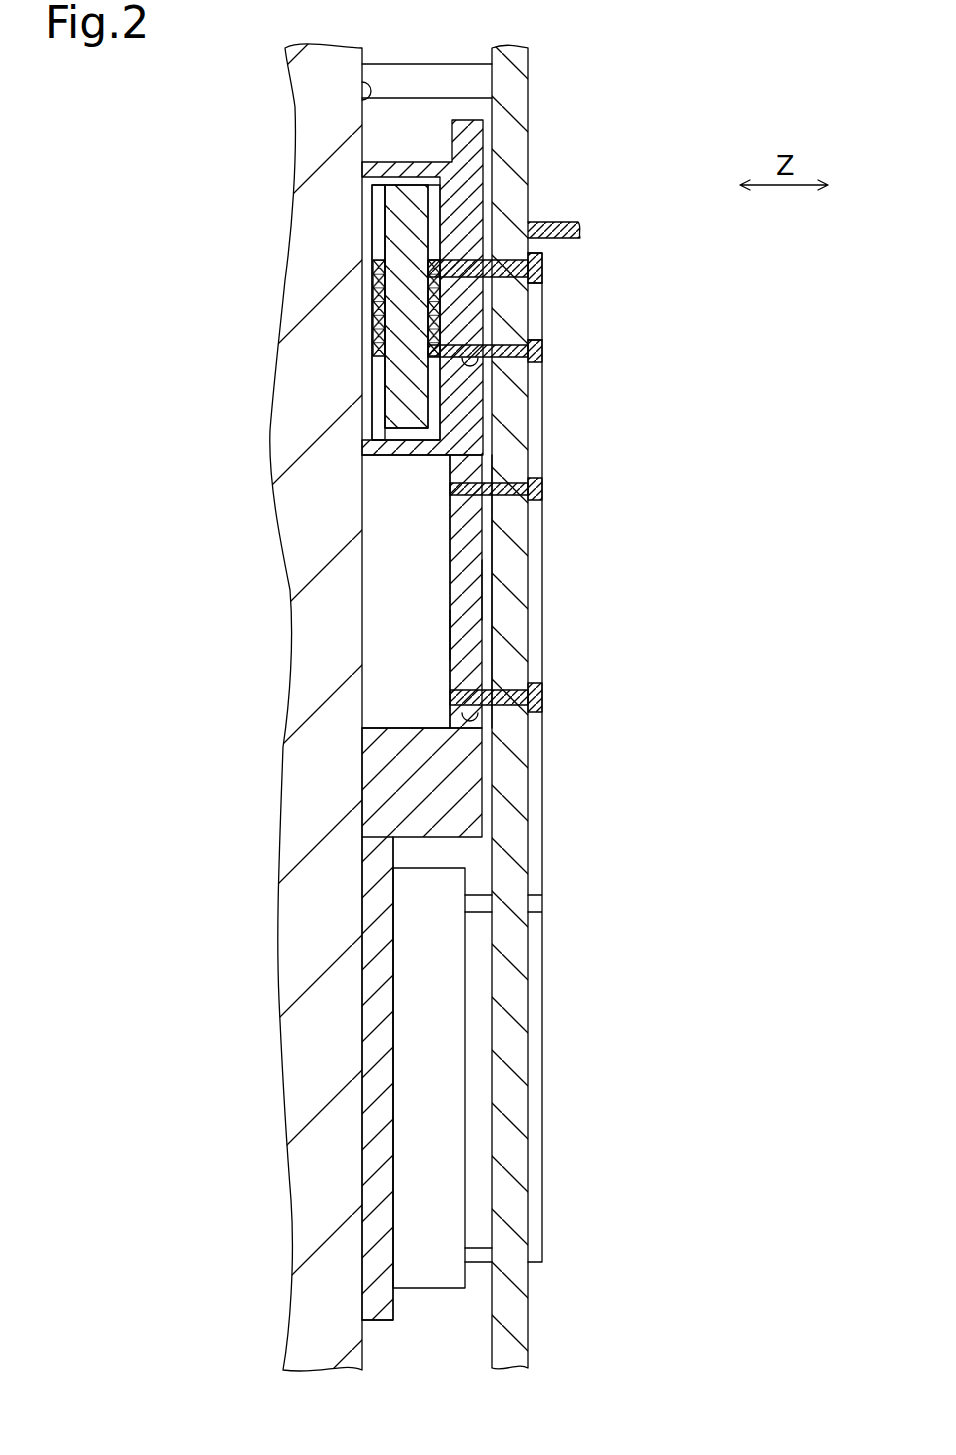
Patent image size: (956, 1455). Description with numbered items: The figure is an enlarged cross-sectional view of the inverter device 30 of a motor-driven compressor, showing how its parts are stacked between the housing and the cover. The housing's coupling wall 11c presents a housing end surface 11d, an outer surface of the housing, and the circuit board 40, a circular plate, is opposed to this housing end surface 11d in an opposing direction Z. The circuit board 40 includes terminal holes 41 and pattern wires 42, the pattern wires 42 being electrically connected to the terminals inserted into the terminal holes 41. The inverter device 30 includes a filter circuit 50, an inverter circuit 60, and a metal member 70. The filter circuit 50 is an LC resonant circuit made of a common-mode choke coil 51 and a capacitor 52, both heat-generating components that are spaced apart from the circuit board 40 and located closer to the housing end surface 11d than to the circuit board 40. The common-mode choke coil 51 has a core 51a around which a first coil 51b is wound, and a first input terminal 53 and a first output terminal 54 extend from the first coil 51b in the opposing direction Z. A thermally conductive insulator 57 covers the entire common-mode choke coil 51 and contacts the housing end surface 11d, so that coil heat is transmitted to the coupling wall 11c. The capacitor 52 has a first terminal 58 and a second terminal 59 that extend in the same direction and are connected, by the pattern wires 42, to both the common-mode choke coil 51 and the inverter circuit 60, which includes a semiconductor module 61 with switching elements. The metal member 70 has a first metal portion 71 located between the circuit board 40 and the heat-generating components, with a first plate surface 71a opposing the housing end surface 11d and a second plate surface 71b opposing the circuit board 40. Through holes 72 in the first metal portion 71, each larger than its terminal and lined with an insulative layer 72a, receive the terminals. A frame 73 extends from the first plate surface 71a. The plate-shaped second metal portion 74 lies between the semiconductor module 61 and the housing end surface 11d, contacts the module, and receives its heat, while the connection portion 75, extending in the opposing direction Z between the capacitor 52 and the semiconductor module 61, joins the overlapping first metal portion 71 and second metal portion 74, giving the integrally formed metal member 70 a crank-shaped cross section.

The coupling wall 11c is at (312, 145).
The housing end surface 11d is at (362, 87).
The inverter device 30 is at (672, 86).
The circuit board 40 is at (522, 102).
The terminal holes 41 is at (535, 340).
The pattern wires 42 is at (545, 412).
The filter circuit 50 is at (336, 312).
The common-mode choke coil 51 is at (372, 232).
The core 51a is at (400, 376).
The first coil 51b is at (373, 262).
The capacitor 52 is at (362, 613).
The first input terminal 53 is at (545, 270).
The first output terminal 54 is at (545, 350).
The thermally conductive insulator 57 is at (378, 336).
The first terminal 58 is at (545, 490).
The second terminal 59 is at (545, 700).
The inverter circuit 60 is at (492, 1060).
The semiconductor module 61 is at (468, 975).
The metal member 70 is at (421, 1024).
The first metal portion 71 is at (465, 542).
The first plate surface 71a is at (448, 628).
The second plate surface 71b is at (482, 592).
The through holes 72 is at (497, 258).
The insulative layer 72a is at (470, 368).
The frame 73 is at (375, 160).
The second metal portion 74 is at (385, 1108).
The connection portion 75 is at (470, 775).